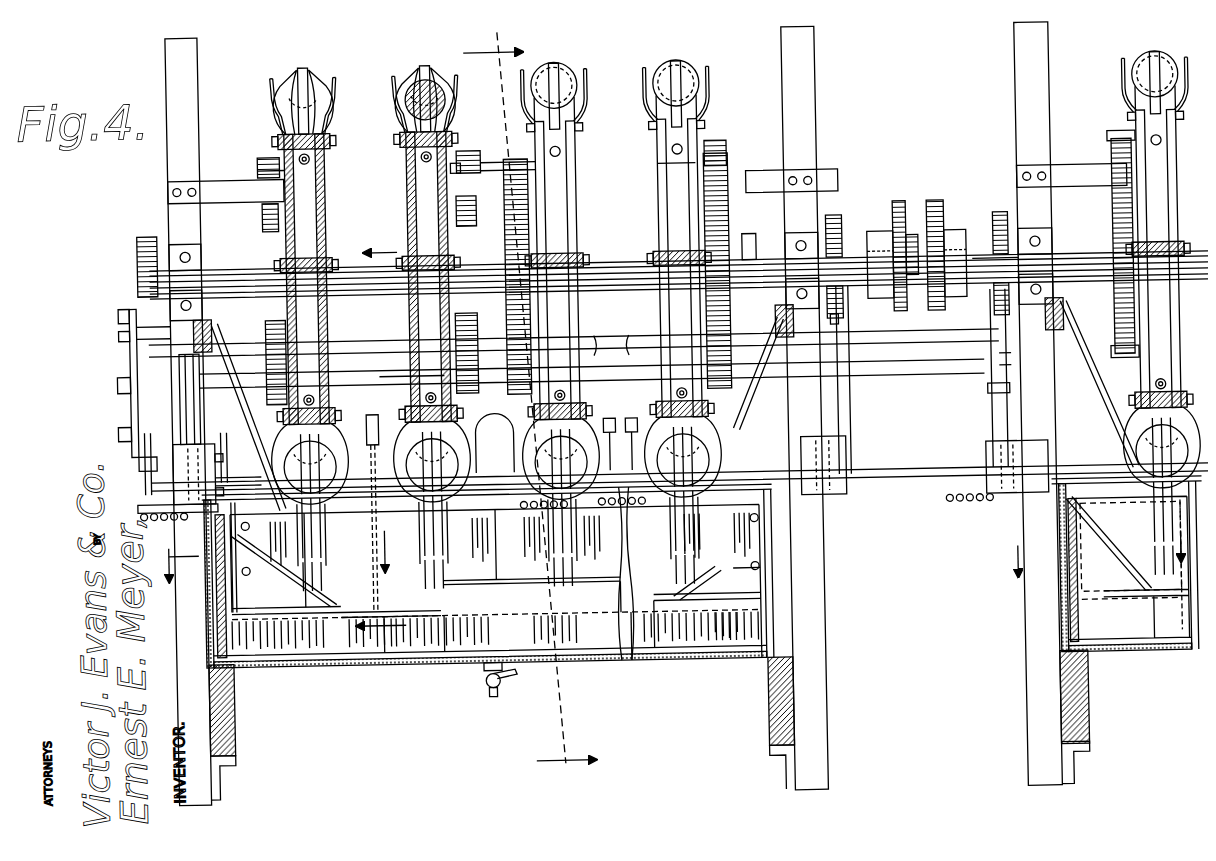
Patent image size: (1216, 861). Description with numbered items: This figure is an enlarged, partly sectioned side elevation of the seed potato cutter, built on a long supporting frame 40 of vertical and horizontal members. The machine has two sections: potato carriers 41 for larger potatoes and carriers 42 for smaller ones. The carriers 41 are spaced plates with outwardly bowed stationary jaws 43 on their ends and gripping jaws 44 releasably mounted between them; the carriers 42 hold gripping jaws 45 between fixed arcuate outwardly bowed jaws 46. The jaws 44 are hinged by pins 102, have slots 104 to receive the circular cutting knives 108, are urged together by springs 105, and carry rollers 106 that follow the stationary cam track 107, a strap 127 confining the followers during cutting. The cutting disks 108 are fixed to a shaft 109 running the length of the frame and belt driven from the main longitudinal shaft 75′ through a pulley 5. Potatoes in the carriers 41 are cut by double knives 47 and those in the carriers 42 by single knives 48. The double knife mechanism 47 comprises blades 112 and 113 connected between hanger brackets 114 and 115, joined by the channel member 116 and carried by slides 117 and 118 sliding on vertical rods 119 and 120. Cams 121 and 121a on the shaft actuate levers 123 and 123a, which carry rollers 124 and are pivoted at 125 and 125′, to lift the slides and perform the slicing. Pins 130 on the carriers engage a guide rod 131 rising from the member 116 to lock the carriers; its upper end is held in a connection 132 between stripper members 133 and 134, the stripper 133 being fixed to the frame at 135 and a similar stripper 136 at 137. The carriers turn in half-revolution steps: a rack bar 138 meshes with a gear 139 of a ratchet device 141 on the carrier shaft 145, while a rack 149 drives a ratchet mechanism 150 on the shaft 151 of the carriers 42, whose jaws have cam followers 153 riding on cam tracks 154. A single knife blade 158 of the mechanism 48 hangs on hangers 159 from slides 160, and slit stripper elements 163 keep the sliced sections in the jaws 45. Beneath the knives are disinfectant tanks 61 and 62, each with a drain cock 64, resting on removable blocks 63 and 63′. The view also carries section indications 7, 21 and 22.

The pulley 5 is at (529, 404).
The section line 7- 7 is at (377, 433).
The section line 21- 21 is at (284, 555).
The section line 22- 22 is at (1079, 551).
The supporting frame 40 is at (172, 148).
The potato carriers 41 is at (330, 180).
The carriers 42 is at (1141, 222).
The outwardly bowed stationary jaws 43 is at (278, 96).
The gripping jaws 44 is at (304, 70).
The gripping jaws 45 is at (1150, 64).
The fixed arcuate outwardly bowed jaws 46 is at (1130, 88).
The double knife mechanism 47 is at (515, 570).
The single knife mechanism 48 is at (1131, 550).
The tank 61 is at (415, 660).
The tank 62 is at (1110, 660).
The removable block 63 is at (229, 700).
The removable block 63′ is at (1083, 722).
The drain cock 64 is at (480, 680).
The longitudinally extending shaft 75′ is at (620, 296).
The pins 102 is at (330, 165).
The slots 104 is at (318, 70).
The springs 105 is at (470, 160).
The rollers 106 is at (262, 156).
The stationary cam track 107 is at (508, 235).
The circular cutting knives 108 is at (290, 440).
The shaft 109 is at (250, 468).
The blade 112 is at (576, 565).
The blade 113 is at (480, 582).
The hanger bracket 114 is at (229, 580).
The hanger bracket 115 is at (790, 600).
The channel member 116 is at (640, 660).
The slide 117 is at (138, 454).
The slide 118 is at (852, 436).
The vertical rod 119 is at (180, 400).
The vertical rod 120 is at (860, 380).
The cam 121 is at (140, 240).
The cam 121a is at (1003, 219).
The lever 123 is at (131, 352).
The lever 123a is at (992, 330).
The roller 124 is at (120, 306).
The pivot 125 is at (118, 377).
The nut 125′ is at (990, 392).
The strap 127 is at (590, 400).
The pins 130 is at (365, 372).
The guide rod 131 is at (393, 513).
The connection 132 is at (400, 340).
The stripper member 133 is at (245, 330).
The stripper member 134 is at (493, 445).
The connection 135 is at (120, 326).
The stripper member 136 is at (752, 392).
The connection 137 is at (745, 250).
The rack bar 138 is at (900, 206).
The gear 139 is at (914, 240).
The ratchet device 141 is at (880, 244).
The carrier shaft 145 is at (605, 262).
The rack 149 is at (938, 206).
The ratchet mechanism 150 is at (960, 236).
The shaft 151 is at (1075, 262).
The cam followers 153 is at (1122, 140).
The cam tracks 154 is at (1126, 148).
The single knife blade 158 is at (1178, 660).
The hangers 159 is at (1064, 600).
The slides 160 is at (1000, 478).
The stripper elements 163 is at (1108, 418).